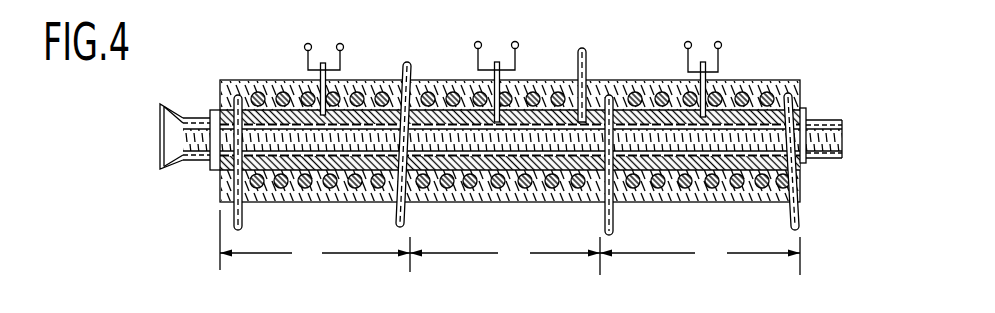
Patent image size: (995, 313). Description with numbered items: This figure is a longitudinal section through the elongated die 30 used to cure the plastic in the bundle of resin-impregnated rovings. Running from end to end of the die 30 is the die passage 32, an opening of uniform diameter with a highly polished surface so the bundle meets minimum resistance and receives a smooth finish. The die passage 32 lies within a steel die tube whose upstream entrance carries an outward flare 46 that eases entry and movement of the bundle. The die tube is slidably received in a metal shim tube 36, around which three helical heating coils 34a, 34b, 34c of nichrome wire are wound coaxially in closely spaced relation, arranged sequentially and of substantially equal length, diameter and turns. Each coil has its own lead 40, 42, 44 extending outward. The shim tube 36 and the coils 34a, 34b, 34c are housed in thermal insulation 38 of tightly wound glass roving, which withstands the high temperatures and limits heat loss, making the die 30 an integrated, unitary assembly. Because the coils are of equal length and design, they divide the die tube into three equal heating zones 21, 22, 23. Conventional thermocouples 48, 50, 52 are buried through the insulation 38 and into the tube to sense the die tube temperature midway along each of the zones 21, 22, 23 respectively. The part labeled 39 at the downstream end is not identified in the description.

The first heating zone 21 is at (315, 241).
The second heating zone 22 is at (505, 256).
The third heating zone 23 is at (700, 256).
The die 30 is at (536, 55).
The die passage 32 is at (843, 130).
The heating coil 34a is at (358, 91).
The heating coil 34b is at (534, 91).
The heating coil 34c is at (636, 91).
The shim tube 36 is at (212, 111).
The thermal insulation 38 is at (251, 92).
The bearing collar 39 is at (820, 119).
The lead 40 is at (396, 223).
The lead 42 is at (412, 69).
The lead 44 is at (789, 222).
The outward flare 46 is at (178, 170).
The thermocouple 48 is at (304, 47).
The thermocouple 50 is at (497, 62).
The thermocouple 52 is at (722, 46).